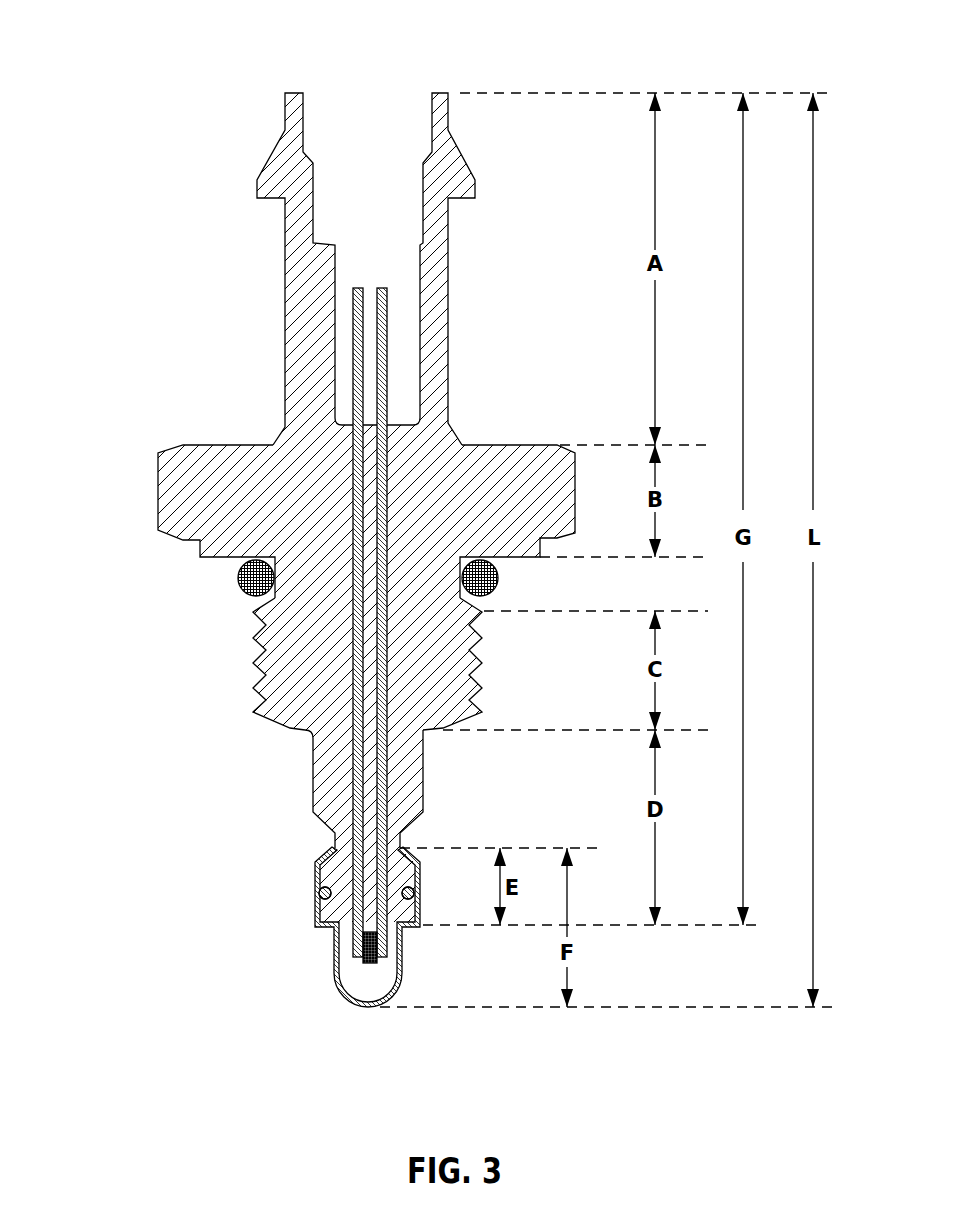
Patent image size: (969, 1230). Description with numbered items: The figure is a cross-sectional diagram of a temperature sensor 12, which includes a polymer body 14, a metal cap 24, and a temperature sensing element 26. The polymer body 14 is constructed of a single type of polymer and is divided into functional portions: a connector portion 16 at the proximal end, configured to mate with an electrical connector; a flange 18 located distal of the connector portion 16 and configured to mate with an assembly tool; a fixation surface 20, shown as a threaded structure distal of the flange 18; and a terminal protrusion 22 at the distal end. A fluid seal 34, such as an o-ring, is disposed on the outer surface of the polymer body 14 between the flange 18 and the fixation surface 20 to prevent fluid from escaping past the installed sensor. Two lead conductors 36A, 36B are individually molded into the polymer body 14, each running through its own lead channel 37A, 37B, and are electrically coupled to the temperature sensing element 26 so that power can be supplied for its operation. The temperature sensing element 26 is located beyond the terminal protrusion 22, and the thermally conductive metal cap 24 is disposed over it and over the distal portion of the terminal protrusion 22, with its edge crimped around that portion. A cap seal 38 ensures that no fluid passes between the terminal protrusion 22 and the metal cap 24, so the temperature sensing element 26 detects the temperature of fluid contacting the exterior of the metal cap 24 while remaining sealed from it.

The temperature sensor 12 is at (312, 538).
The polymer body 14 is at (285, 383).
The connector portion 16 is at (255, 277).
The flange 18 is at (145, 497).
The fixation surface 20 is at (240, 662).
The terminal protrusion 22 is at (305, 807).
The metal cap 24 is at (359, 1006).
The temperature sensing element 26 is at (361, 962).
The fluid seal 34 is at (237, 580).
The lead conductor 36A is at (353, 286).
The lead conductor 36B is at (377, 286).
The lead channel 37A is at (342, 722).
The lead channel 37B is at (365, 743).
The cap seal 38 is at (318, 895).